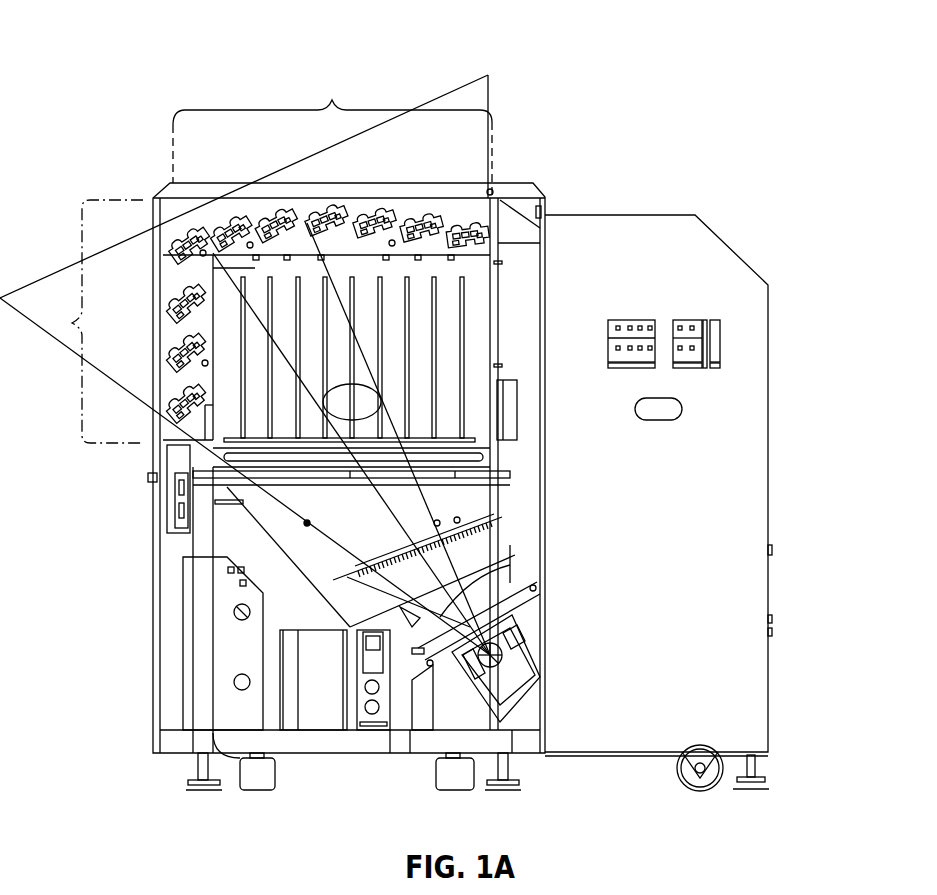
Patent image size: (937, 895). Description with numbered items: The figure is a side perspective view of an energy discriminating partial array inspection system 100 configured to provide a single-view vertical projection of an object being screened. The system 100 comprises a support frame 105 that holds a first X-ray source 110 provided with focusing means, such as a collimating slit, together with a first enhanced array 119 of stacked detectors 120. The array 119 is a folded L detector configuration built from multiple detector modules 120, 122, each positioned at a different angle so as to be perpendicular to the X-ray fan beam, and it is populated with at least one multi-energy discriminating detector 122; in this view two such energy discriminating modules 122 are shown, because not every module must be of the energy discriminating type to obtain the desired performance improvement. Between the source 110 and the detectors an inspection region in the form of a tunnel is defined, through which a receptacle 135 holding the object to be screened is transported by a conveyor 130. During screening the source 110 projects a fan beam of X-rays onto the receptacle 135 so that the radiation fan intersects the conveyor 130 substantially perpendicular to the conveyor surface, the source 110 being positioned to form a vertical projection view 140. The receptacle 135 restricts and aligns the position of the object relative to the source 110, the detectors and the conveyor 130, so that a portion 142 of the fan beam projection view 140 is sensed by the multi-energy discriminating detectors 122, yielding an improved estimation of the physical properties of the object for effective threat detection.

The energy discriminating partial array inspection system 100 is at (146, 42).
The support frame 105 is at (710, 246).
The first X-ray source 110 is at (505, 690).
The first enhanced array 119 is at (72, 323).
The stacked detectors 120 is at (370, 203).
The multi-energy discriminating detector 122 is at (170, 197).
The conveyor 130 is at (465, 447).
The receptacle 135 is at (345, 410).
The vertical projection view 140 is at (473, 103).
The portion of the fan beam projection view 142 is at (165, 272).